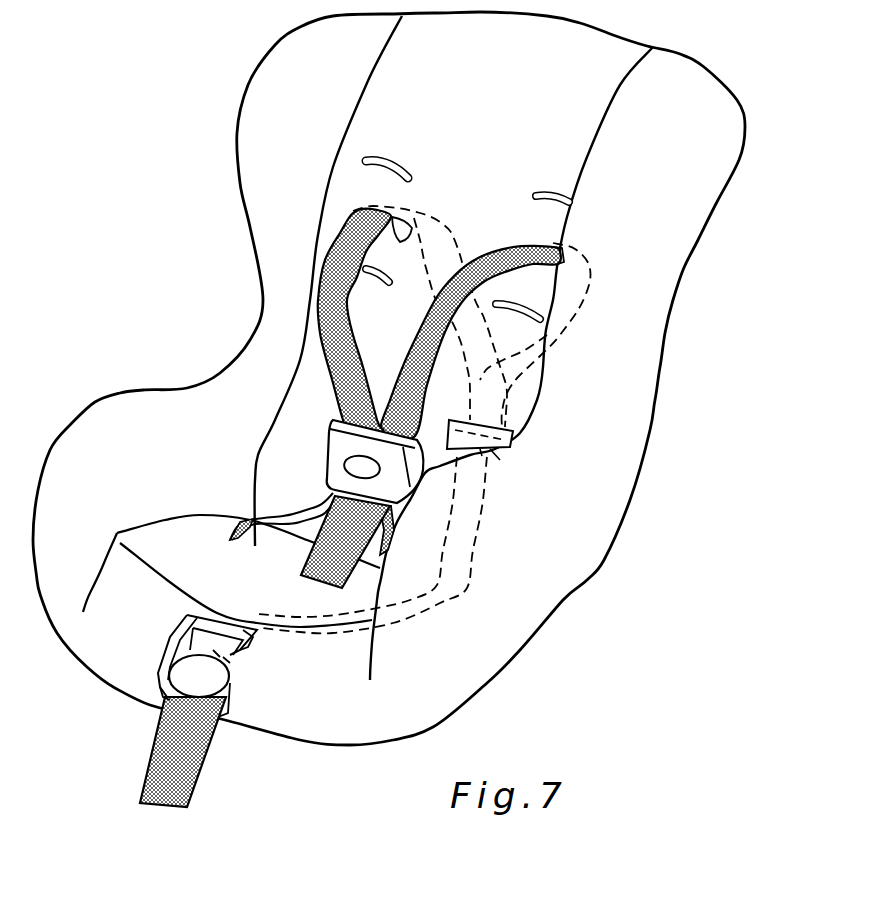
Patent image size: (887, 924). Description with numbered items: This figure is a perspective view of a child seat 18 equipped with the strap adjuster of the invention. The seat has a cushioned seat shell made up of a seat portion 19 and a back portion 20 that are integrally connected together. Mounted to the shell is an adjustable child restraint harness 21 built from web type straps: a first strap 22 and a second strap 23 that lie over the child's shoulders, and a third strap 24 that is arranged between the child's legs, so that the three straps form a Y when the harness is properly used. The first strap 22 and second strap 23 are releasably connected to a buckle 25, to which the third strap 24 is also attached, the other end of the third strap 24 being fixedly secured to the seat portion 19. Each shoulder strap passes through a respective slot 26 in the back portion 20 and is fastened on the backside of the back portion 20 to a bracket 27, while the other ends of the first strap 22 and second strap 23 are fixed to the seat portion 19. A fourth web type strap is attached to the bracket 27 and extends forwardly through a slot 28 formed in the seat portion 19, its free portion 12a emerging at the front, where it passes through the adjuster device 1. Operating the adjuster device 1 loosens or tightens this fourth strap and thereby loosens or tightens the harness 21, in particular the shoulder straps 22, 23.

The child seat 18 is at (128, 128).
The seat portion 19 is at (197, 550).
The back portion 20 is at (615, 338).
The child restraint harness 21 is at (402, 382).
The first web type strap 22 is at (408, 366).
The second web type strap 23 is at (332, 306).
The third web type strap 24 is at (333, 540).
The buckle 25 is at (337, 453).
The slot 26 is at (513, 248).
The bracket 27 is at (500, 463).
The slot 28 is at (235, 668).
The adjuster device 1 is at (153, 629).
The belt strap 12a is at (173, 750).